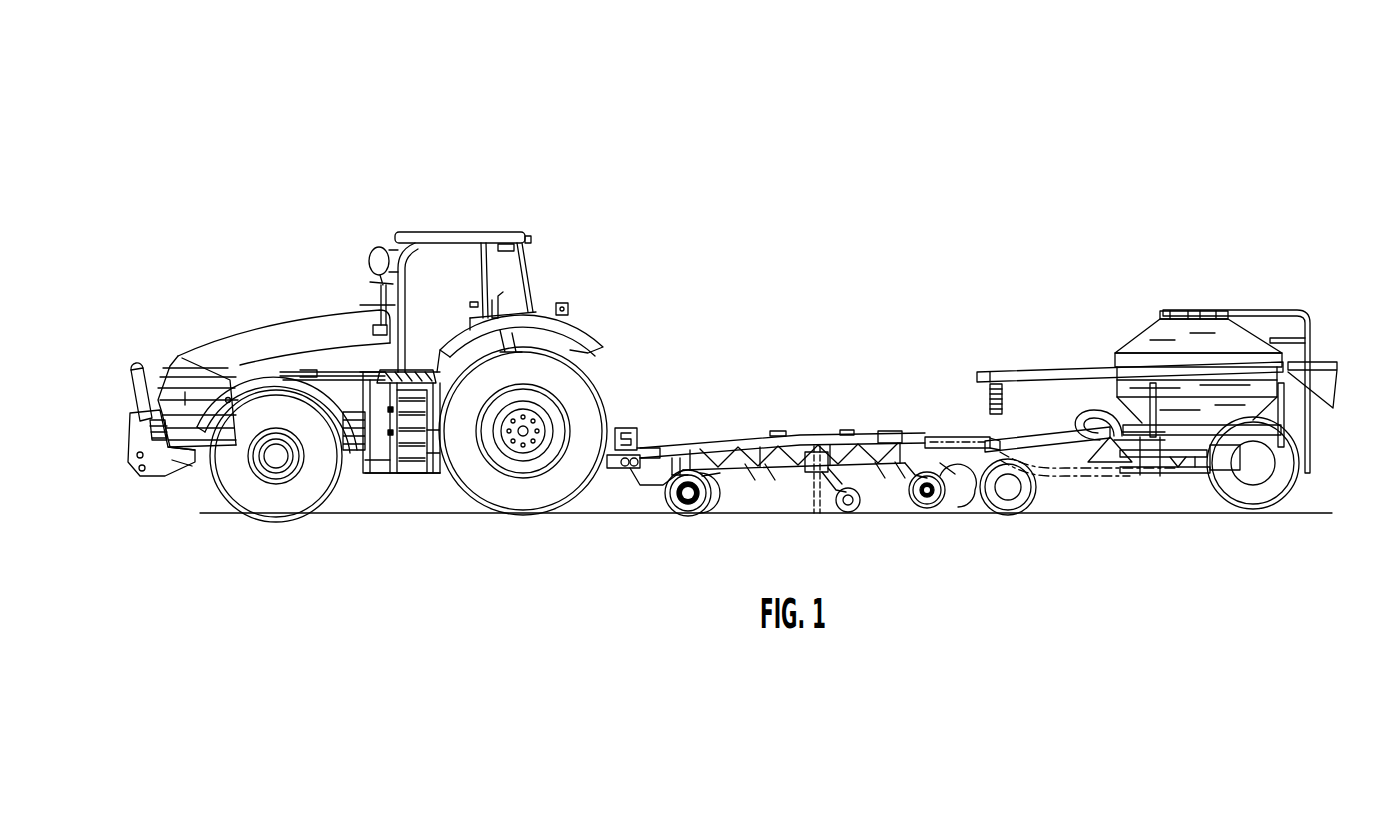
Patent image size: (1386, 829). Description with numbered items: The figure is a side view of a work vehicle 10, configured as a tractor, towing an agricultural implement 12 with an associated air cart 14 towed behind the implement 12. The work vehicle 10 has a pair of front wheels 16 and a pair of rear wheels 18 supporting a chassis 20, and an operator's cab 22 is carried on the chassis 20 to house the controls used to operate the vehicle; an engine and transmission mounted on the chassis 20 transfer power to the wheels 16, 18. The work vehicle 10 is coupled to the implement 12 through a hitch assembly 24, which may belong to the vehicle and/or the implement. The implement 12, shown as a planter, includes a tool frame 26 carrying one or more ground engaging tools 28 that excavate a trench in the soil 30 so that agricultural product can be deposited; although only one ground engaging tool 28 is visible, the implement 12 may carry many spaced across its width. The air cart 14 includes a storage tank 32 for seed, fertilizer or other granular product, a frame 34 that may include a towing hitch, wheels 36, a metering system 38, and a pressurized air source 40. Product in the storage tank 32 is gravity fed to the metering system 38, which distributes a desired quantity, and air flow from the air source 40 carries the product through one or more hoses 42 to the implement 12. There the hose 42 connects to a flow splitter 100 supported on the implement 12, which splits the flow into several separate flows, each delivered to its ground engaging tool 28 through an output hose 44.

The work vehicle 10 is at (730, 377).
The agricultural implement 12 is at (875, 452).
The air cart 14 is at (1157, 394).
The front wheels 16 is at (280, 512).
The rear wheels 18 is at (490, 500).
The chassis 20 is at (365, 470).
The operator's cab 22 is at (500, 240).
The hitch assembly 24 is at (664, 431).
The tool frame 26 is at (816, 446).
The ground engaging tools 28 is at (815, 502).
The soil 30 is at (888, 512).
The storage tank 32 is at (1150, 337).
The frame 34 is at (1052, 432).
The wheels 36 is at (1048, 479).
The metering system 38 is at (1178, 478).
The pressurized air source 40 is at (1080, 420).
The hoses 42 is at (1108, 480).
The output hose 44 is at (858, 435).
The flow splitter 100 is at (892, 433).